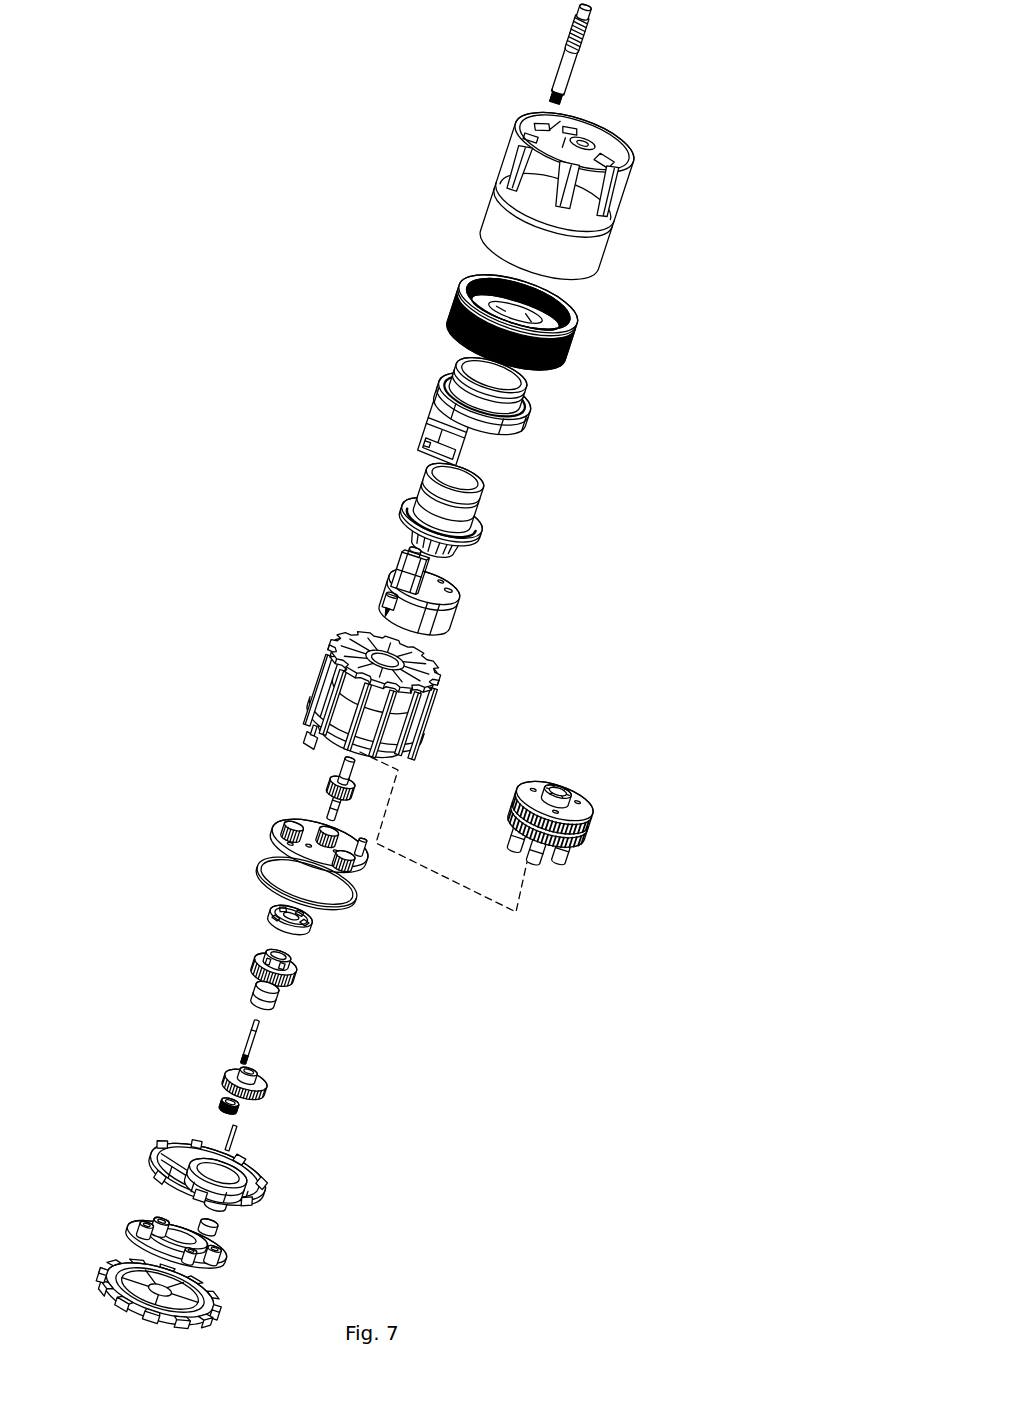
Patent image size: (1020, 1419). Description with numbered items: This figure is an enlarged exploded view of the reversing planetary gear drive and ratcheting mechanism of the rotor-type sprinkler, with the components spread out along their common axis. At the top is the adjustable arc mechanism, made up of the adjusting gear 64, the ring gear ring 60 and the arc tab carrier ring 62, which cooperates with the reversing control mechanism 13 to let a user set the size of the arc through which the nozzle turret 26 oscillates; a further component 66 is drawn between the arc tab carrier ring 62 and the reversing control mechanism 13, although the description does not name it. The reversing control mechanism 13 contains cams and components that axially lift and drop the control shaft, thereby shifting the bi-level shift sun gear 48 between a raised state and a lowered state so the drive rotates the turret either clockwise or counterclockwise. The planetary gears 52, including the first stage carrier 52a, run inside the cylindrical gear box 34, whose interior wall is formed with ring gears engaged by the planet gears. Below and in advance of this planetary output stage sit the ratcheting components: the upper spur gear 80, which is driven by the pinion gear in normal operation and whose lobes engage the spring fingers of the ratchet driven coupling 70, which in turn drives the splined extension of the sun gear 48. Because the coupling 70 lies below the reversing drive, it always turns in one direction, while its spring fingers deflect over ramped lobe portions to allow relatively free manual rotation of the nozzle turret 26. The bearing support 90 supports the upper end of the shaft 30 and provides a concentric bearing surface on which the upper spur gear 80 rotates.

The adjusting gear 64 is at (577, 75).
The nozzle turret 26 is at (602, 255).
The ring gear ring 60 is at (575, 348).
The arc tab carrier ring 62 is at (528, 425).
The bearing support 66 is at (476, 537).
The reversing control mechanism 13 is at (483, 607).
The gear box 34 is at (330, 648).
The bi-level shift sun gear 48 is at (327, 788).
The planetary gears 52 is at (619, 810).
The first stage carrier 52a is at (270, 840).
The ratchet driven coupling 70 is at (262, 915).
The upper spur gear 80 is at (258, 962).
The bearing support 90 is at (250, 993).
The shaft 30 is at (243, 1040).